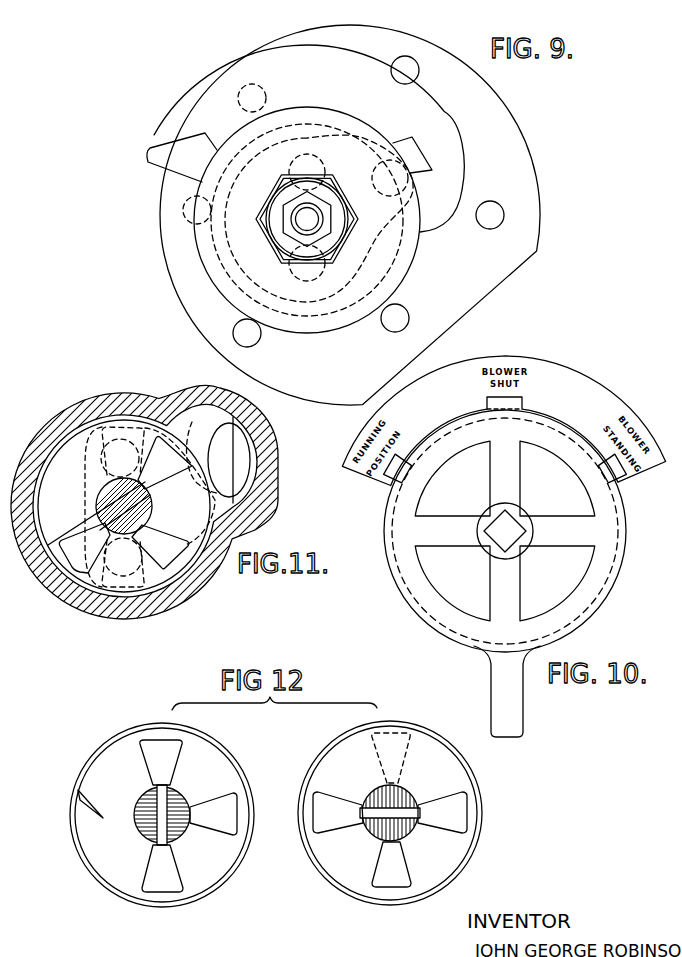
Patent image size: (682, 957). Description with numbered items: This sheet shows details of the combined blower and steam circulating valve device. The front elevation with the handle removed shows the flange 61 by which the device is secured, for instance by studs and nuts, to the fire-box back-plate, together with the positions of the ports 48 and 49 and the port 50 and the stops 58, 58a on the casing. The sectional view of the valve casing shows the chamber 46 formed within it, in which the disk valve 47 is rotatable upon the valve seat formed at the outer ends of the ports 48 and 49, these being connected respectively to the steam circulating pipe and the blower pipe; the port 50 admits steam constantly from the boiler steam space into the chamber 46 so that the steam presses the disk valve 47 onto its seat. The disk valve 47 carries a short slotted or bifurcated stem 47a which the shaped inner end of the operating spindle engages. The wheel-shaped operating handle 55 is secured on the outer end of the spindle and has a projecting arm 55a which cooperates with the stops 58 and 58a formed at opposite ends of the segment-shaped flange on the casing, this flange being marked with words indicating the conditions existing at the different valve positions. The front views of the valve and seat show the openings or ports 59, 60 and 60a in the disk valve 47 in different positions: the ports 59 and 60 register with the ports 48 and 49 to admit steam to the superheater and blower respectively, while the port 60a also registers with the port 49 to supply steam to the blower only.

In FIG. 11, the chamber 46 is at (58, 427).
In FIG. 11, the disk valve 47 is at (67, 512).
In FIG. 12, the disk valve 47 is at (105, 817).
In FIG. 11, the slotted or bifurcated stem 47a is at (110, 517).
In FIG. 12, the slotted or bifurcated stem 47a is at (165, 816).
In FIG. 9, the port 48 is at (297, 177).
In FIG. 11, the port 48 is at (107, 423).
In FIG. 12, the port 48 is at (153, 750).
In FIG. 9, the port 49 is at (297, 273).
In FIG. 11, the port 49 is at (147, 588).
In FIG. 12, the port 49 is at (163, 875).
In FIG. 9, the port 50 is at (433, 180).
In FIG. 11, the port 50 is at (222, 445).
In FIG. 10, the operating handle 55 is at (585, 592).
In FIG. 10, the projecting arm 55a is at (500, 403).
In FIG. 9, the stop 58 is at (410, 160).
In FIG. 10, the stop 58 is at (613, 473).
In FIG. 9, the stop 58a is at (202, 160).
In FIG. 10, the stop 58a is at (370, 489).
In FIG. 11, the port 59 is at (167, 453).
In FIG. 12, the port 59 is at (178, 762).
In FIG. 11, the port 60 is at (75, 557).
In FIG. 12, the port 60 is at (145, 870).
In FIG. 11, the port 60a is at (173, 557).
In FIG. 12, the port 60a is at (425, 903).
In FIG. 9, the flange 61 is at (468, 278).